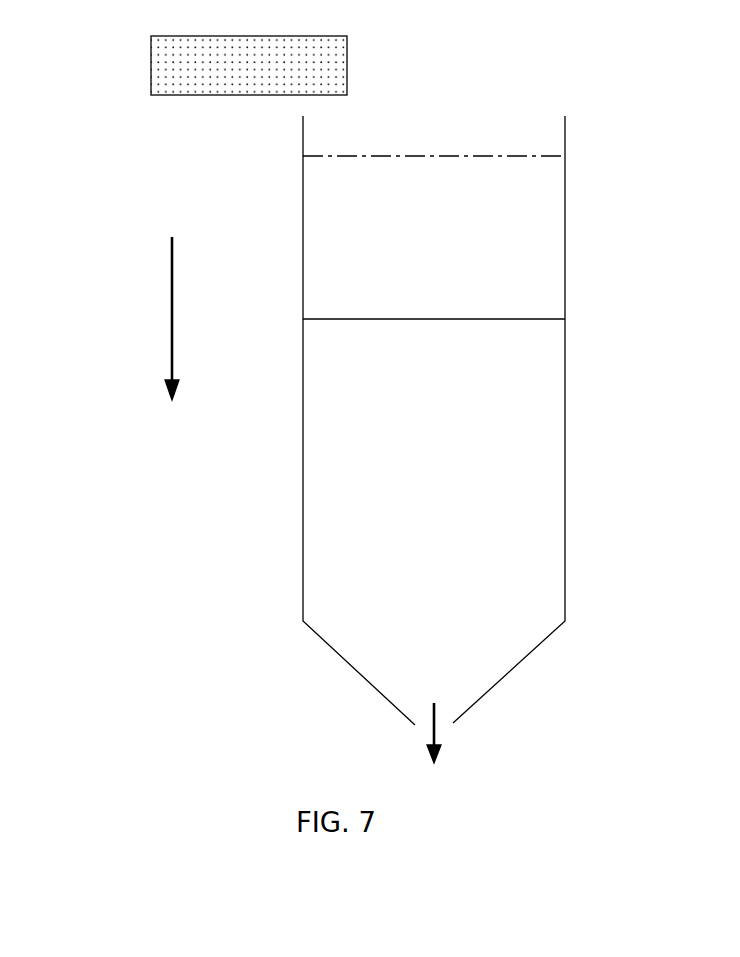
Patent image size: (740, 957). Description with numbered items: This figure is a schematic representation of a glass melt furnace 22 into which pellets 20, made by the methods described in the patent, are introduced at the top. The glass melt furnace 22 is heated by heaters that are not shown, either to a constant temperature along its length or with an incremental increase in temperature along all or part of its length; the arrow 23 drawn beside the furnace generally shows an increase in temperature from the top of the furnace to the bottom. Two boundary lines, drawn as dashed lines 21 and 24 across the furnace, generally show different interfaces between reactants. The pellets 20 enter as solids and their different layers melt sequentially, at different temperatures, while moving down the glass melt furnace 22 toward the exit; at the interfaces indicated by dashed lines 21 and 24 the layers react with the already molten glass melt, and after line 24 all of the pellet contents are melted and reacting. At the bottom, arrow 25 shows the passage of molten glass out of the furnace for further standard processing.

The pellets 20 is at (150, 66).
The dashed line 21 is at (350, 156).
The glass melt furnace 22 is at (565, 175).
The arrow 23 is at (170, 302).
The dashed line 24 is at (500, 318).
The arrow 25 is at (437, 738).